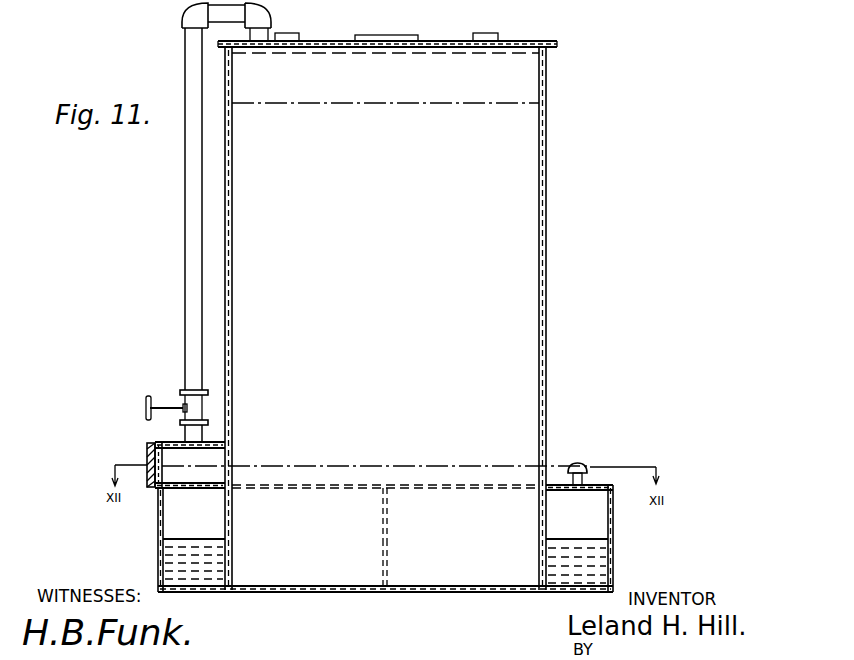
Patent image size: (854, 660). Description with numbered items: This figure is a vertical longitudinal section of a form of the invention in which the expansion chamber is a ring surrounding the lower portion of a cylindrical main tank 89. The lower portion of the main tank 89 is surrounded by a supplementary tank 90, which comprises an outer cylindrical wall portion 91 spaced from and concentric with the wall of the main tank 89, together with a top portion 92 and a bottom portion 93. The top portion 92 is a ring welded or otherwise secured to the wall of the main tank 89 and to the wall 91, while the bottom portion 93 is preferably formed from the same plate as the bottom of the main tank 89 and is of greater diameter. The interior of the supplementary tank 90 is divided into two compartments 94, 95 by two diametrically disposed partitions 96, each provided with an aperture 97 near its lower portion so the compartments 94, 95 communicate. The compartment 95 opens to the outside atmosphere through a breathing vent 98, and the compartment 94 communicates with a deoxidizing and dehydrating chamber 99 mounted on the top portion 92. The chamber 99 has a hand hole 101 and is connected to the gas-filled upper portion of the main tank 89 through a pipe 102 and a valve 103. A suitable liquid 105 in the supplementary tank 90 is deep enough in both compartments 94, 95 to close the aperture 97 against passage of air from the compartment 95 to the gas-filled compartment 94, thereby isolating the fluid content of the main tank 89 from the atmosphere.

The main tank 89 is at (548, 245).
The supplementary tank 90 is at (600, 532).
The outer cylindrical wall portion 91 is at (605, 566).
The top portion 92 is at (590, 485).
The bottom portion 93 is at (214, 593).
The compartment 94 is at (207, 526).
The compartment 95 is at (582, 530).
The partition 96 is at (387, 525).
The aperture 97 is at (388, 583).
The breathing vent 98 is at (578, 463).
The deoxidizing and dehydrating chamber 99 is at (215, 460).
The hand hole 101 is at (147, 455).
The pipe 102 is at (185, 290).
The valve 103 is at (188, 404).
The liquid 105 is at (163, 557).